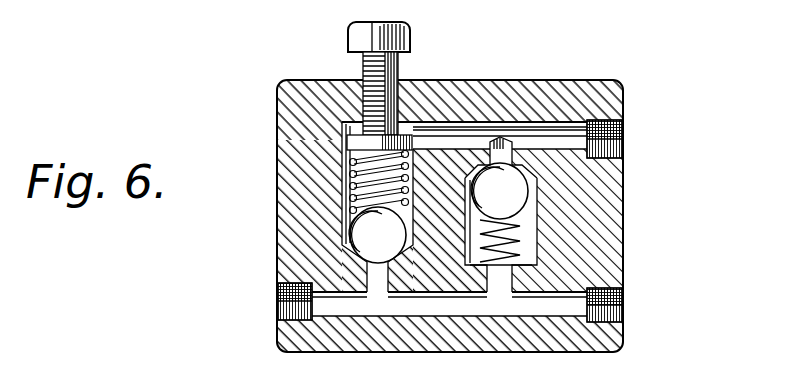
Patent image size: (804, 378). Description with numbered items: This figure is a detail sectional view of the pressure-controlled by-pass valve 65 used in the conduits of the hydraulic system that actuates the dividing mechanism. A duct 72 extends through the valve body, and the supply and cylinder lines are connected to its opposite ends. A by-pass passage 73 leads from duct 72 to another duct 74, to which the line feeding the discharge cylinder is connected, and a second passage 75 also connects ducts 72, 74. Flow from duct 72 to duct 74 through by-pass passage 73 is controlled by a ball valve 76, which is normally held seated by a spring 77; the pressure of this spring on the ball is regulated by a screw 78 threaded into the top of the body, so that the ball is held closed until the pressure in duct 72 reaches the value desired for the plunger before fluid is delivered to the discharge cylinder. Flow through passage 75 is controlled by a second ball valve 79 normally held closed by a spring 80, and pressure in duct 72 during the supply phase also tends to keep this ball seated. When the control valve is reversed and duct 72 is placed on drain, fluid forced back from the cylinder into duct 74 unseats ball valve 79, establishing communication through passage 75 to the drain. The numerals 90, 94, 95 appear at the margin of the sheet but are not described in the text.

The pressure-controlled by-pass valve 65 is at (540, 351).
The duct 72 is at (462, 310).
The by-pass passage 73 is at (380, 283).
The duct 74 is at (538, 130).
The second passage 75 is at (527, 243).
The ball valve 76 is at (350, 240).
The spring 77 is at (352, 180).
The screw 78 is at (398, 76).
The ball valve 79 is at (515, 186).
The spring 80 is at (512, 226).
The passage 90 is at (236, 367).
The passage 94 is at (284, 367).
The passage 95 is at (341, 369).